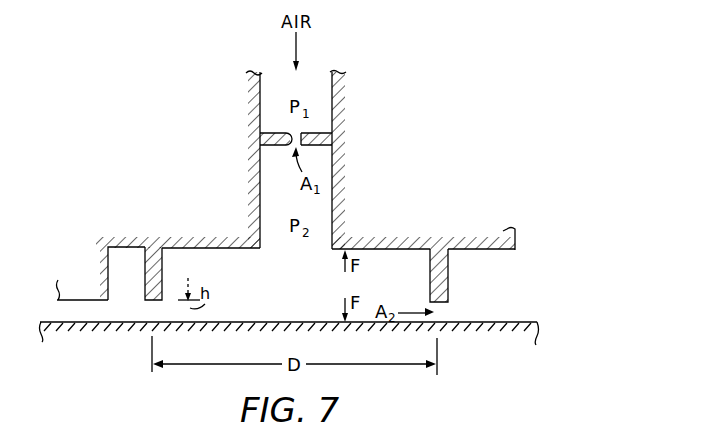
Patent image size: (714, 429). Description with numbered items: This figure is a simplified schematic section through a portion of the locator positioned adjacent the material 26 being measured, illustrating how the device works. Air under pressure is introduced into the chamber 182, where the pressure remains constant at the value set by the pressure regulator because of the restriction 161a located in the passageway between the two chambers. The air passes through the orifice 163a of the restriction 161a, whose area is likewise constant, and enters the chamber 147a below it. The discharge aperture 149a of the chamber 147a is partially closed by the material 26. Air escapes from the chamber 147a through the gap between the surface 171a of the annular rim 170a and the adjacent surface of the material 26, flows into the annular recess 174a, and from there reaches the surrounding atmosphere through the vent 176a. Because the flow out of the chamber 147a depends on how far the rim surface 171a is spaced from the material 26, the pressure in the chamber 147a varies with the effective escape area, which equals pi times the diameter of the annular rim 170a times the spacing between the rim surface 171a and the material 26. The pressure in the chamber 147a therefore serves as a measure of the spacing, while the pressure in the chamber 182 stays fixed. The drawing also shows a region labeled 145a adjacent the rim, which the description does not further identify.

The material being measured 26 is at (518, 322).
The recess 145a is at (81, 303).
The chamber 147a is at (322, 303).
The discharge aperture 149a is at (443, 300).
The restriction 161a is at (318, 140).
The orifice 163a is at (291, 131).
The annular rim 170a is at (438, 270).
The rim surface 171a is at (495, 285).
The annular recess 174a is at (130, 260).
The vent 176a is at (585, 252).
The chamber 182 is at (333, 100).